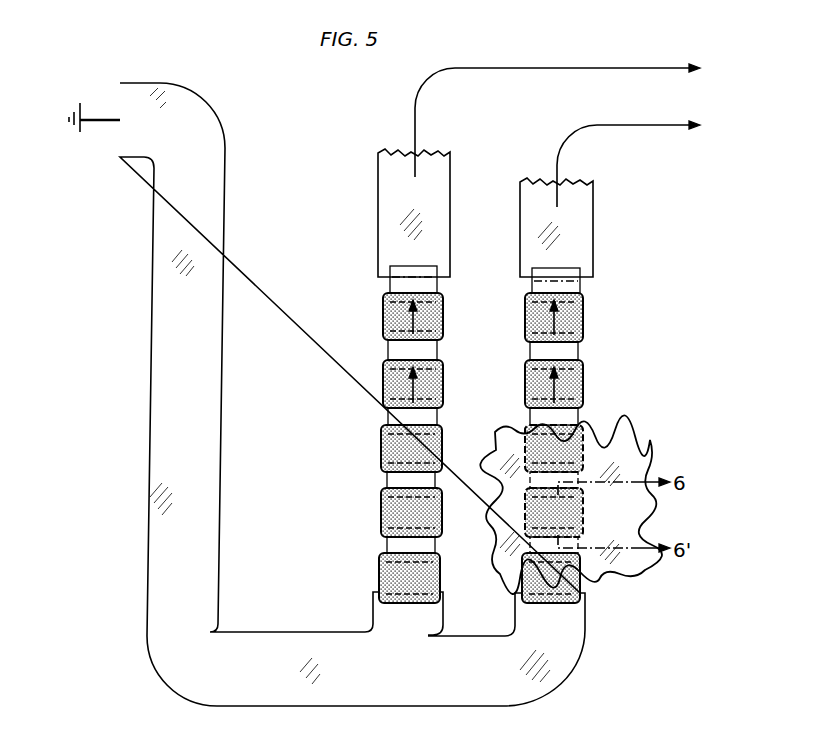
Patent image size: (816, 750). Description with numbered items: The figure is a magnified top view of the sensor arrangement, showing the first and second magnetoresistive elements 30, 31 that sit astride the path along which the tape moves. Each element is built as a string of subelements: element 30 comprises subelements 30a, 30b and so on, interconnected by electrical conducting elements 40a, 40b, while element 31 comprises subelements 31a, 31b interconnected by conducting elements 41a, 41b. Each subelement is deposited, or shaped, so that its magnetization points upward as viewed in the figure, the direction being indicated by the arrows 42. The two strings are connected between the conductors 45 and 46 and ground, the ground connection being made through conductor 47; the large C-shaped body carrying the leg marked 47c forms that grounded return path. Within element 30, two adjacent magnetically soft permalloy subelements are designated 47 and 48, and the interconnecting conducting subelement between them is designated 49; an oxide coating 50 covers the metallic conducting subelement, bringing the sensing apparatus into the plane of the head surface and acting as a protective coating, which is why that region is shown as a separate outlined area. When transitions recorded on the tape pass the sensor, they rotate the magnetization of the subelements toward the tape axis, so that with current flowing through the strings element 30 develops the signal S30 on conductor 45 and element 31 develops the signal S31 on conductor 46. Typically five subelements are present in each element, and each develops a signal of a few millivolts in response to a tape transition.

The yoke leg of magnetic circuit 47c is at (163, 297).
The conductor 46 is at (378, 191).
The conductor 45 is at (528, 197).
The signal S31 is at (579, 117).
The signal S30 is at (650, 161).
The subelement 31a is at (390, 285).
The electrical conducting element 41a is at (443, 320).
The subelement 31b is at (437, 350).
The electrical conducting element 41b is at (443, 380).
The arrows 42 is at (412, 380).
The second magnetoresistive element 31 is at (357, 433).
The subelement 30a is at (580, 283).
The electrical conducting element 40a is at (575, 313).
The subelement 30b is at (568, 350).
The electrical conducting element 40b is at (573, 378).
The first magnetoresistive element 30 is at (618, 426).
The magnetoresistive subelement 47 is at (537, 484).
The interconnecting conducting subelement 49 is at (530, 520).
The magnetoresistive subelement 48 is at (528, 546).
The oxide coating 50 is at (622, 563).